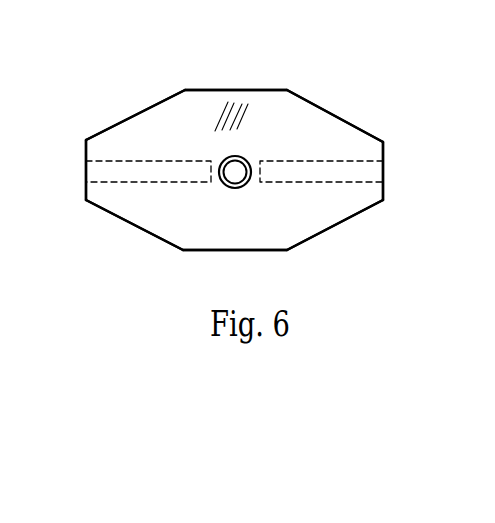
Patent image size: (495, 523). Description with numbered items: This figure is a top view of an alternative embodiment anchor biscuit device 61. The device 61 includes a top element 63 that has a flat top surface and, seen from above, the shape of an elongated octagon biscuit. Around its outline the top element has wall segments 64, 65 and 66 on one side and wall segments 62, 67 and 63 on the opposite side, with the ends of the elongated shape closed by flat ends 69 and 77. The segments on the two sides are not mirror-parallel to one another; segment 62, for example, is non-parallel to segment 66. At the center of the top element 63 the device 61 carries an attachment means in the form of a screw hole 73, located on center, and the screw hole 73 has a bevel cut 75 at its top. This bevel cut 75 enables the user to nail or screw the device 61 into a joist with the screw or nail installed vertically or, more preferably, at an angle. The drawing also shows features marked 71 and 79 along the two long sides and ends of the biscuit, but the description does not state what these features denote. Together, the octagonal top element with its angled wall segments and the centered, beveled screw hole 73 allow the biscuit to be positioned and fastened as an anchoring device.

The anchor biscuit device 61 is at (333, 92).
The wall segment 62 is at (133, 225).
The top element 63 is at (337, 225).
The wall segment 64 is at (358, 127).
The wall segment 65 is at (233, 90).
The wall segment 66 is at (115, 126).
The wall segment 67 is at (235, 250).
The flat end 69 is at (86, 166).
The right side face 71 is at (383, 167).
The screw hole 73 is at (228, 156).
The bevel cut 75 is at (248, 158).
The flat end 77 is at (350, 174).
The left channel 79 is at (117, 172).